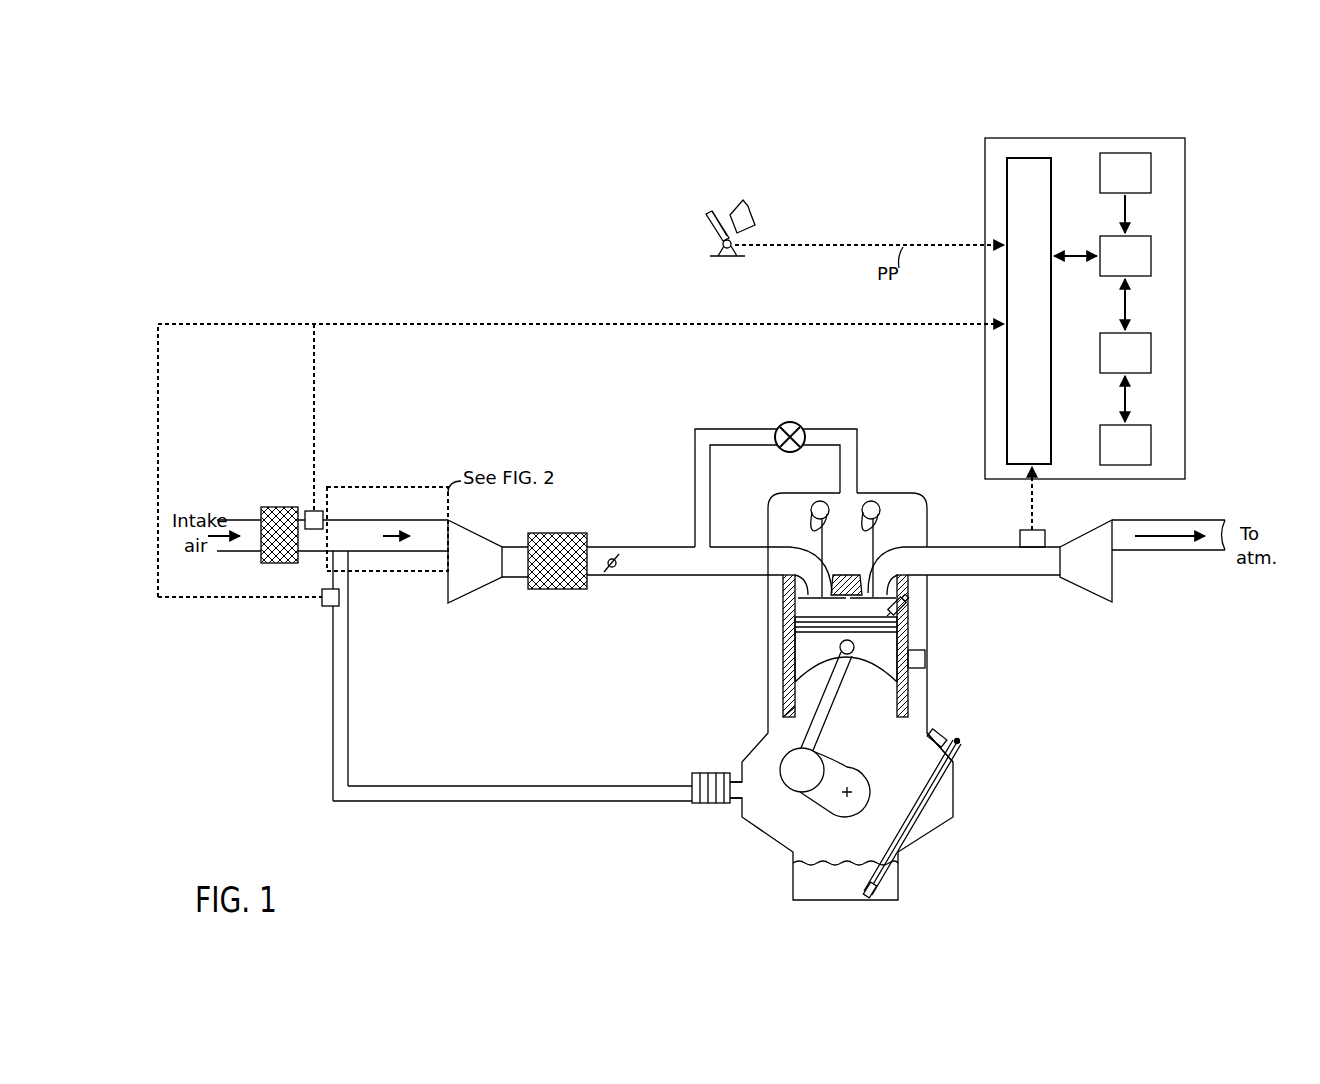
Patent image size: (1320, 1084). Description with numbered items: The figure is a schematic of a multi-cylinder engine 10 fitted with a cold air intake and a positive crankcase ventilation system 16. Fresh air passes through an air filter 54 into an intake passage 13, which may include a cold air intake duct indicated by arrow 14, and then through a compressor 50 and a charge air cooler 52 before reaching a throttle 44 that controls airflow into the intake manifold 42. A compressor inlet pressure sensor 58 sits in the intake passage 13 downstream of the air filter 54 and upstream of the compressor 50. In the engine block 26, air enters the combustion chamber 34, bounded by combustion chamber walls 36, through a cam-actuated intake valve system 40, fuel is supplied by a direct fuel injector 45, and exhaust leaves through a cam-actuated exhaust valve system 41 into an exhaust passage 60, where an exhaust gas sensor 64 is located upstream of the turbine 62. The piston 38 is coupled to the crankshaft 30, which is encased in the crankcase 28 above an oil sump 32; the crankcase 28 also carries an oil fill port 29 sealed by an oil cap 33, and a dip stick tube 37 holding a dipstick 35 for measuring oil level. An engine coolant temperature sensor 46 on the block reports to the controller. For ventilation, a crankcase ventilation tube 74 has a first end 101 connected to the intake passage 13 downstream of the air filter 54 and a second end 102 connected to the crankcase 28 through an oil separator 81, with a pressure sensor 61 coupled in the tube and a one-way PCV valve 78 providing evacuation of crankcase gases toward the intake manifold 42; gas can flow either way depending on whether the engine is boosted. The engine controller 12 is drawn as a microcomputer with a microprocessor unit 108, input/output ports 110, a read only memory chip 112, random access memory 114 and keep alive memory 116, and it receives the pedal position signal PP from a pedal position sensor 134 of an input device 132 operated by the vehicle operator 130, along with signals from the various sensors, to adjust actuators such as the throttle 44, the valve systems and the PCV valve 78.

The engine 10 is at (197, 190).
The engine controller 12 is at (1163, 138).
The intake passage 13 is at (378, 520).
The cold air intake duct 14 is at (432, 476).
The positive crankcase ventilation system 16 is at (520, 703).
The engine block 26 is at (895, 709).
The crankcase 28 is at (942, 818).
The oil fill port 29 is at (928, 736).
The crankshaft 30 is at (801, 778).
The oil sump 32 is at (848, 880).
The oil cap 33 is at (941, 731).
The combustion chamber 34 is at (800, 598).
The dipstick 35 is at (957, 750).
The combustion chamber walls 36 is at (908, 632).
The dip stick tube 37 is at (930, 789).
The piston 38 is at (805, 648).
The intake valve system 40 is at (824, 550).
The exhaust valve system 41 is at (875, 550).
The intake manifold 42 is at (722, 546).
The throttle 44 is at (612, 568).
The fuel injector 45 is at (910, 604).
The engine coolant temperature sensor 46 is at (918, 668).
The compressor 50 is at (488, 561).
The charge air cooler 52 is at (545, 533).
The air filter 54 is at (278, 507).
The compressor inlet pressure sensor 58 is at (316, 510).
The exhaust passage 60 is at (953, 546).
The pressure sensor 61 is at (328, 607).
The turbine 62 is at (1142, 561).
The exhaust gas sensor 64 is at (1045, 530).
The crankcase ventilation tube 74 is at (578, 803).
The PCV valve 78 is at (801, 427).
The oil separator 81 is at (712, 772).
The first end 101 is at (348, 556).
The second end 102 is at (722, 807).
The microprocessor unit 108 is at (1151, 258).
The input/output ports 110 is at (1007, 165).
The read only memory chip 112 is at (1151, 175).
The random access memory 114 is at (1151, 348).
The keep alive memory 116 is at (1151, 437).
The vehicle operator 130 is at (748, 210).
The input device 132 is at (708, 222).
The pedal position sensor 134 is at (716, 251).